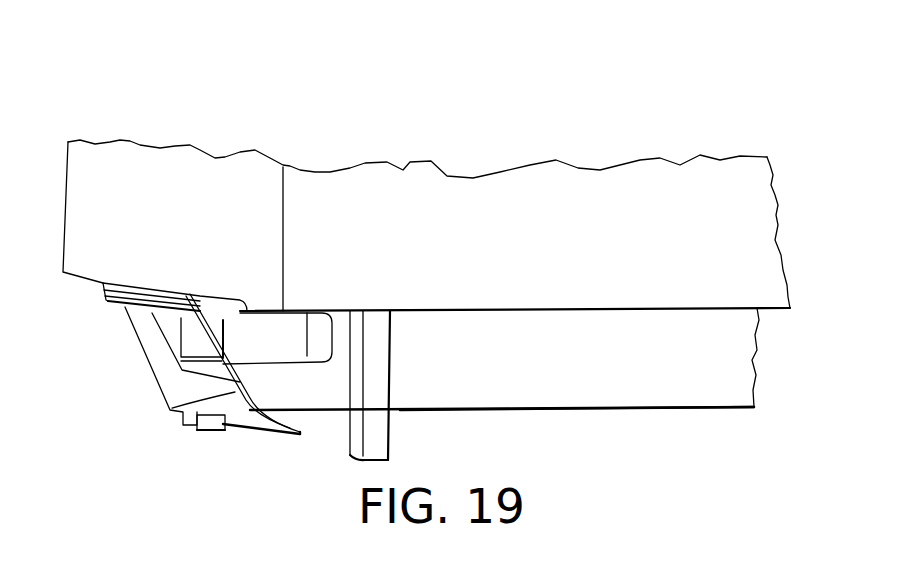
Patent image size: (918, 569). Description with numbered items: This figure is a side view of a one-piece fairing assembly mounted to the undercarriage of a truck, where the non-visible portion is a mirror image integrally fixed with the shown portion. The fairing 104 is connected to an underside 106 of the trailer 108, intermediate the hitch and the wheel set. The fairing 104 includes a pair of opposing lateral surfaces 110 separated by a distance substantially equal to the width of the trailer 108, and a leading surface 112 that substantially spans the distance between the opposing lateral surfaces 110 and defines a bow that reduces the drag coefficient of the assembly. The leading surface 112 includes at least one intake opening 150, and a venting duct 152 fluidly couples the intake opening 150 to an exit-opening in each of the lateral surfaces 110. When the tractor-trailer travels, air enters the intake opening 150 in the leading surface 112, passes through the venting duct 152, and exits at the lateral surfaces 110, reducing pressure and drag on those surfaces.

The fairing 104 is at (457, 378).
The underside 106 is at (527, 310).
The trailer 108 is at (417, 203).
The lateral surfaces 110 is at (683, 410).
The leading surface 112 is at (178, 385).
The intake opening 150 is at (180, 300).
The venting duct 152 is at (270, 342).